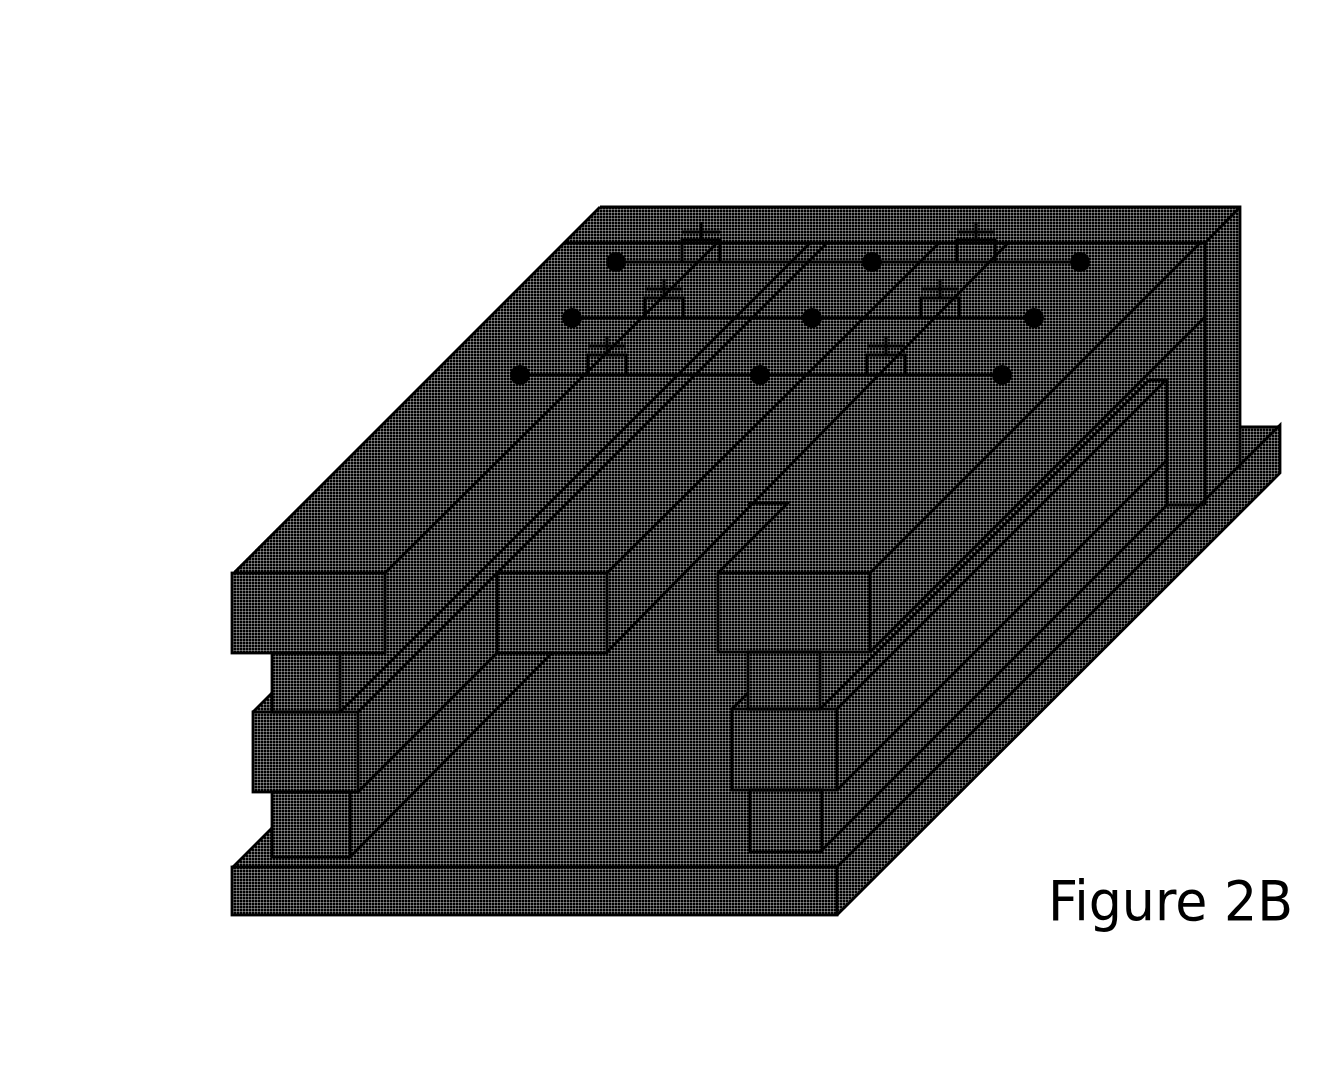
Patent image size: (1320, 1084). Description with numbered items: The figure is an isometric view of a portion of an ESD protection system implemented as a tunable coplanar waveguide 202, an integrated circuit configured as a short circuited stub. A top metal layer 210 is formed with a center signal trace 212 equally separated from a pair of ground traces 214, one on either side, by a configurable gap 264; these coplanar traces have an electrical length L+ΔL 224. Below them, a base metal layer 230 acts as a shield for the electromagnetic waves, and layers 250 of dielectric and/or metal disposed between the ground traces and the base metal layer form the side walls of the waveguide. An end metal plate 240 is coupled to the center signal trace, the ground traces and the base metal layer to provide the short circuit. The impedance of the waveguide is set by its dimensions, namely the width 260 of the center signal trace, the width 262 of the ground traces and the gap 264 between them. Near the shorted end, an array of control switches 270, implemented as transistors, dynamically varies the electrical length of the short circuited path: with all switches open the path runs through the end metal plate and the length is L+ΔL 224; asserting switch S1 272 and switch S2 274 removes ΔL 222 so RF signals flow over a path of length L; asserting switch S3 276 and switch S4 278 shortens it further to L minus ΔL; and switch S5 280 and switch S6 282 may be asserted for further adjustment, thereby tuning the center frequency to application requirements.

The tunable coplanar waveguide 202 is at (226, 145).
The top metal layer 210 is at (232, 573).
The center signal trace 212 is at (828, 285).
The ground traces 214 is at (570, 275).
The ΔL 222 is at (616, 262).
The electrical length L+ΔL 224 is at (505, 257).
The base metal layer 230 is at (232, 868).
The end metal plate 240 is at (1020, 215).
The layers of dielectric and/or metal 250 is at (232, 866).
The width of the center signal trace 260 is at (525, 558).
The width of the pair of ground traces 262 is at (268, 558).
The gap 264 is at (415, 558).
The array of control switches 270 is at (1010, 405).
The switch S1 272 is at (719, 200).
The switch S2 274 is at (981, 200).
The switch S3 276 is at (701, 298).
The switch S4 278 is at (977, 298).
The switch S5 280 is at (643, 355).
The switch S6 282 is at (929, 355).